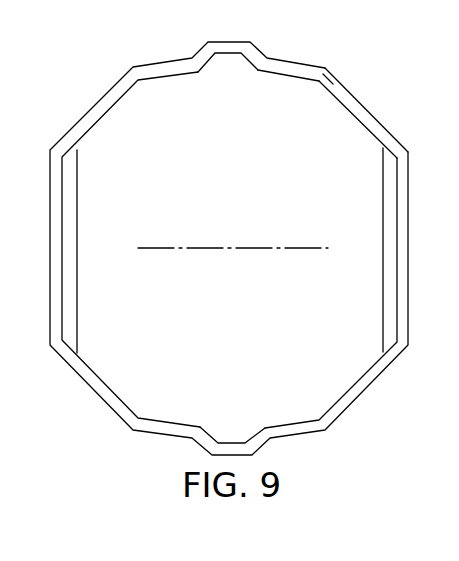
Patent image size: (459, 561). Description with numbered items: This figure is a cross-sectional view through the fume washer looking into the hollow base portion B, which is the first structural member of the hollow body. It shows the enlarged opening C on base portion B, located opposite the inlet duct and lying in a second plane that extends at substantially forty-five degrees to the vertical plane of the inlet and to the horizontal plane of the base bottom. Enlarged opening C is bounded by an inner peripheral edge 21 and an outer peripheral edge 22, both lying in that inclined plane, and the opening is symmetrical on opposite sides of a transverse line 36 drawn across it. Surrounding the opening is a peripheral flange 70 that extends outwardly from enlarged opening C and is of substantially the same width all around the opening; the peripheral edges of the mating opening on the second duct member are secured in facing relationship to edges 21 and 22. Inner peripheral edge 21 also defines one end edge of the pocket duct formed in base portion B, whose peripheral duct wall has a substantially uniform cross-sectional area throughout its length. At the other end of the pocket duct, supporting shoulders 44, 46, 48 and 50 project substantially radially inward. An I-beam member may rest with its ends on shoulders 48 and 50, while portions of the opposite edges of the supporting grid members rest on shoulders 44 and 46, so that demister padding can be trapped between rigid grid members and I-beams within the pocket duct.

The inner peripheral edge 21 is at (126, 94).
The outer peripheral edge 22 is at (111, 90).
The transverse line 36 is at (288, 248).
The supporting shoulder 44 is at (70, 173).
The supporting shoulder 46 is at (383, 197).
The supporting shoulder 48 is at (231, 62).
The supporting shoulder 50 is at (242, 437).
The peripheral flange 70 is at (333, 84).
The hollow base portion B is at (377, 117).
The enlarged opening C is at (368, 134).